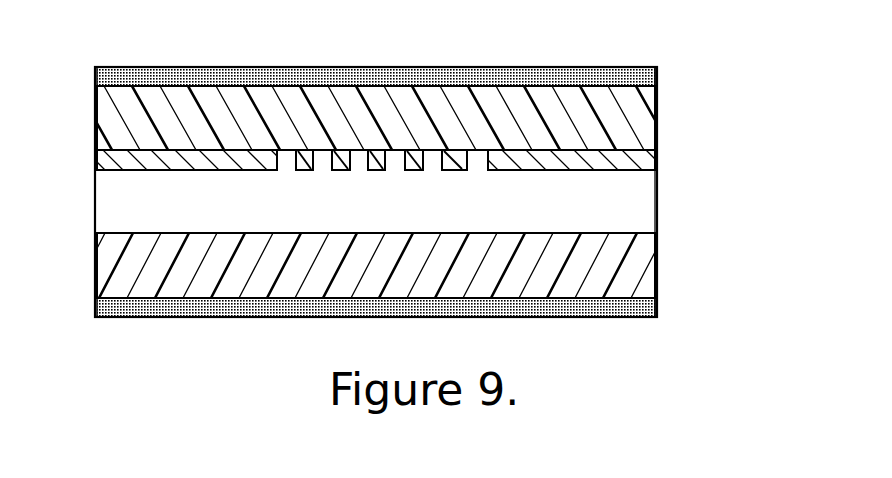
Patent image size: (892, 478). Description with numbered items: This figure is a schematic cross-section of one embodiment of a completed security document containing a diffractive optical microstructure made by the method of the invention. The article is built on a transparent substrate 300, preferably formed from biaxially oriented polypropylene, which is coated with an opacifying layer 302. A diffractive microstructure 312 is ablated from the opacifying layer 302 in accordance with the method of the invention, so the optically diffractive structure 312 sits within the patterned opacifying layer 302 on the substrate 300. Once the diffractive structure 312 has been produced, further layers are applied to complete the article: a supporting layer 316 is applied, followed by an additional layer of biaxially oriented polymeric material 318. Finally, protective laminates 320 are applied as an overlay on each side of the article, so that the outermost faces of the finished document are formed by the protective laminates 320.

The transparent substrate 300 is at (620, 117).
The opacifying layer 302 is at (640, 155).
The diffractive microstructure 312 is at (510, 157).
The supporting layer 316 is at (635, 217).
The layer of biaxially oriented polymeric material 318 is at (622, 267).
The protective laminate 320 is at (613, 67).